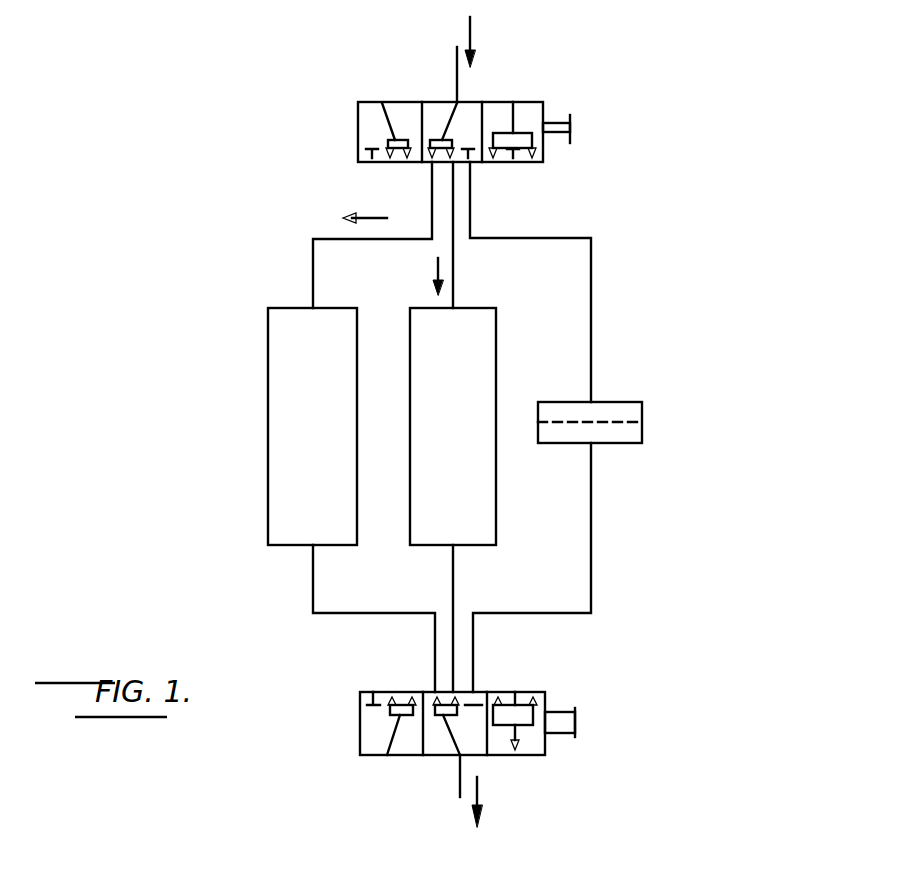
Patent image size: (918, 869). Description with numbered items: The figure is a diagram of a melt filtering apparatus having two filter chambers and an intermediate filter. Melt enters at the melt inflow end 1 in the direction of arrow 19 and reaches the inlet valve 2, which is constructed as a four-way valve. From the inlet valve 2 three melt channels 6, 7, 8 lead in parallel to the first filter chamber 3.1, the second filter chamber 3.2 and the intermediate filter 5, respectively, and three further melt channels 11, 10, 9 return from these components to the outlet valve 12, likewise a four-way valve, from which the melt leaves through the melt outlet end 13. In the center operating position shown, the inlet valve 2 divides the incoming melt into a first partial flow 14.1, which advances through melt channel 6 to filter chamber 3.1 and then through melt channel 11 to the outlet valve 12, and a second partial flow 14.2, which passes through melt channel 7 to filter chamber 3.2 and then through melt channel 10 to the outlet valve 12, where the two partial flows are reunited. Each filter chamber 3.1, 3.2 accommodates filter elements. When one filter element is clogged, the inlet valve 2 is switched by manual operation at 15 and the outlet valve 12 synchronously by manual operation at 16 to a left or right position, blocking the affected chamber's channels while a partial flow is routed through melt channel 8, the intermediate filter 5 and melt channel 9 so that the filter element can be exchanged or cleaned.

The melt inflow end 1 is at (457, 77).
The inlet valve 2 is at (533, 103).
The filter chamber 3.1 is at (269, 390).
The filter chamber 3.2 is at (496, 475).
The intermediate filter 5 is at (633, 402).
The melt channel 6 is at (312, 268).
The melt channel 7 is at (453, 258).
The melt channel 8 is at (591, 272).
The melt channel 9 is at (592, 572).
The melt channel 10 is at (453, 582).
The melt channel 11 is at (313, 583).
The outlet valve 12 is at (368, 737).
The melt outlet end 13 is at (460, 773).
The first partial flow 14.1 is at (377, 218).
The second partial flow 14.2 is at (433, 275).
The manual operation 15 is at (553, 140).
The manual operation 16 is at (560, 712).
The arrow 19 is at (472, 40).